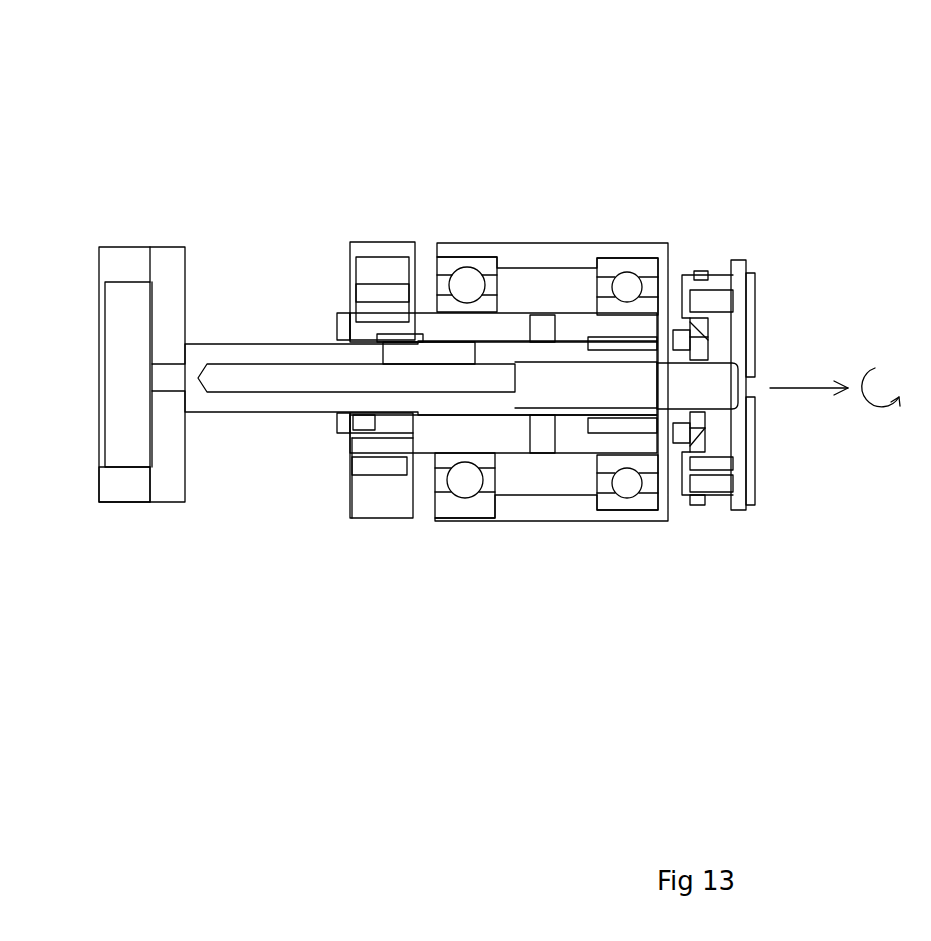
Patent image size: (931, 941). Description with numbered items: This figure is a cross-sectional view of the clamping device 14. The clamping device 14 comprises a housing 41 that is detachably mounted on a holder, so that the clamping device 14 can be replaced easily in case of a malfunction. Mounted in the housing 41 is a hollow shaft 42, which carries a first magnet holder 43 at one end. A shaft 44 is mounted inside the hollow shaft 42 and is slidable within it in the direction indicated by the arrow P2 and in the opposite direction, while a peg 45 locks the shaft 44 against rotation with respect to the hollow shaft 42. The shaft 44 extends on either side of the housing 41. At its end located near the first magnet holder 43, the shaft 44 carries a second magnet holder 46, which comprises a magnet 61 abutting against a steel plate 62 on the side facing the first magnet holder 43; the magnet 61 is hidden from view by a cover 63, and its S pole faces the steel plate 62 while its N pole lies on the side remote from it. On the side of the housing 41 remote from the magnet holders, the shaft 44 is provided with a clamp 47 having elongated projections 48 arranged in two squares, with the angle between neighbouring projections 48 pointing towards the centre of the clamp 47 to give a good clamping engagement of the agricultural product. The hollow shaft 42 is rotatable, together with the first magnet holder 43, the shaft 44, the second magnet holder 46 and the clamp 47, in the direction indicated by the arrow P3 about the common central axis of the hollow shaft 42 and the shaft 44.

The clamping device 14 is at (128, 128).
The second magnet holder 46 is at (147, 207).
The magnet 61 is at (123, 327).
The steel plate 62 is at (173, 288).
The cover 63 is at (120, 485).
The shaft 44 is at (272, 352).
The peg 45 is at (410, 350).
The hollow shaft 42 is at (422, 306).
The first magnet holder 43 is at (382, 262).
The housing 41 is at (567, 258).
The clamp 47 is at (738, 263).
The elongated projection 48 is at (757, 312).
The arrow P2 is at (803, 392).
The arrow P3 is at (880, 408).